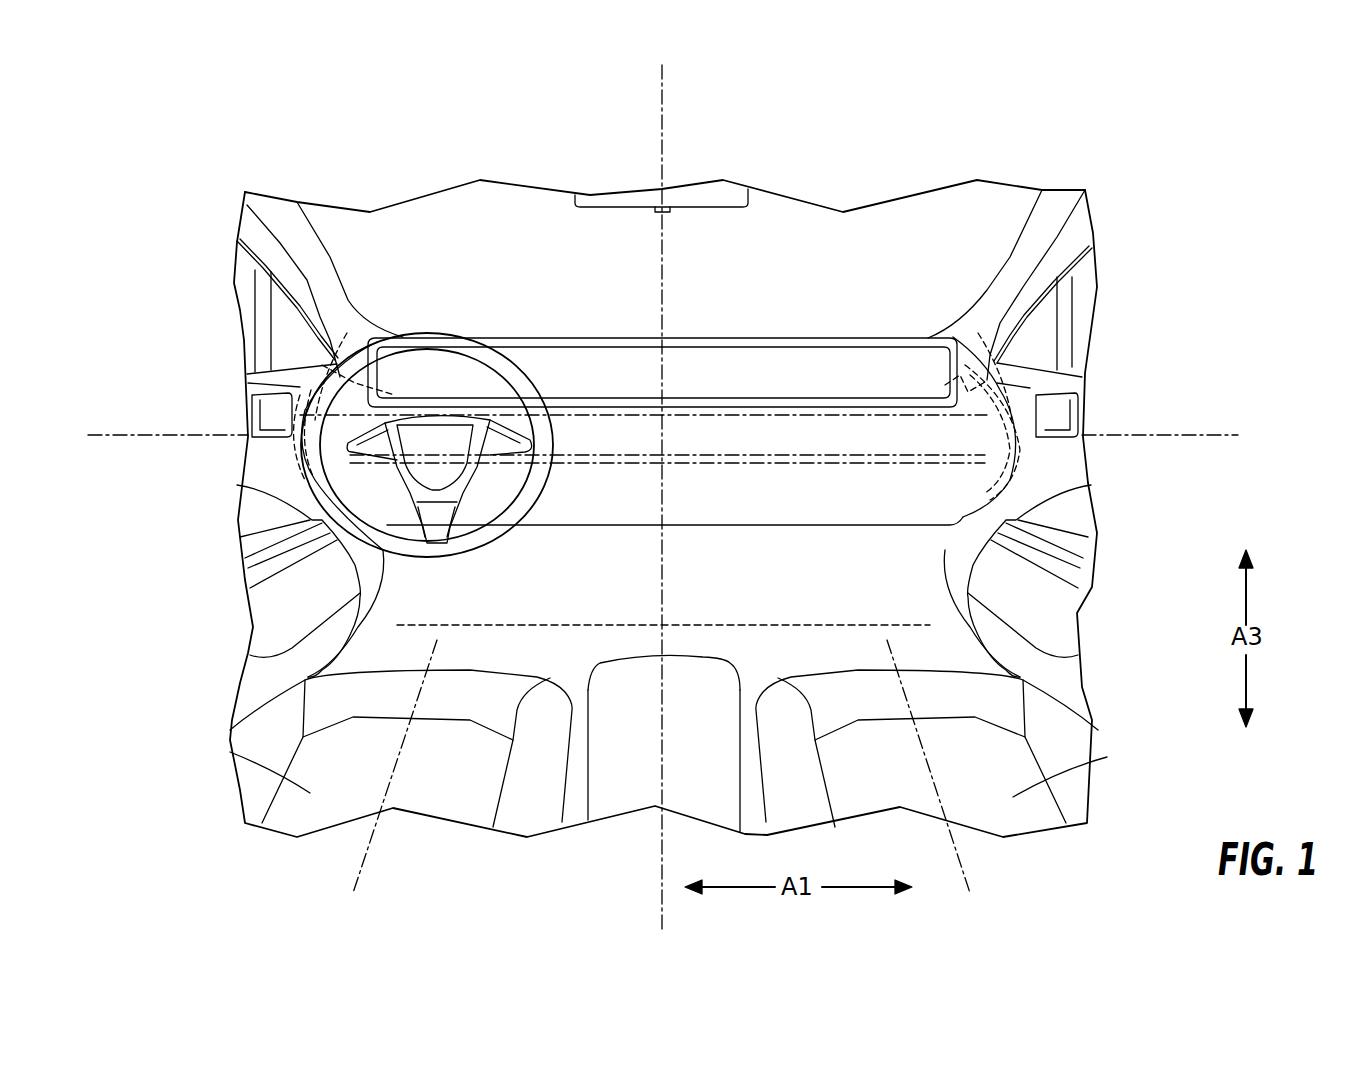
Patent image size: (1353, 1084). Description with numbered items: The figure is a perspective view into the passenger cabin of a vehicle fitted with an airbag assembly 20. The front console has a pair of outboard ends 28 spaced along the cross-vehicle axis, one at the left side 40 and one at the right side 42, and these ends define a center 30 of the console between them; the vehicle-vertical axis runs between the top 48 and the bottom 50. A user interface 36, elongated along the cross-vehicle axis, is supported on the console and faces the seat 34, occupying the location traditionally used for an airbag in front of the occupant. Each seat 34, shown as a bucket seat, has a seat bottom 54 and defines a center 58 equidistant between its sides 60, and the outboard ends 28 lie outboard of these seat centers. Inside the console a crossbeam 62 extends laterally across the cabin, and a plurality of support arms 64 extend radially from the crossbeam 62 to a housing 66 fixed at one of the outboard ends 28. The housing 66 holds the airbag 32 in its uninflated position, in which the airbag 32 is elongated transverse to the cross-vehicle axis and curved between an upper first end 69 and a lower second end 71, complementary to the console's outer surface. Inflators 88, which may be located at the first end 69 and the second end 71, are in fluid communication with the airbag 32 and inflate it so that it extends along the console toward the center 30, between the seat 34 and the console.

The airbag assembly 20 is at (1133, 258).
The outboard ends 28 is at (362, 352).
The center 30 is at (666, 108).
The airbag 32 is at (290, 383).
The seat 34 is at (305, 766).
The user interface 36 is at (568, 368).
The left side 40 is at (240, 522).
The right side 42 is at (1092, 540).
The top 48 is at (592, 193).
The bottom 50 is at (830, 640).
The seat bottom 54 is at (462, 782).
The center 58 is at (360, 845).
The sides 60 is at (262, 688).
The crossbeam 62 is at (740, 468).
The support arms 64 is at (385, 440).
The housing 66 is at (300, 428).
The first end 69 is at (355, 362).
The second end 71 is at (390, 555).
The inflators 88 is at (300, 358).